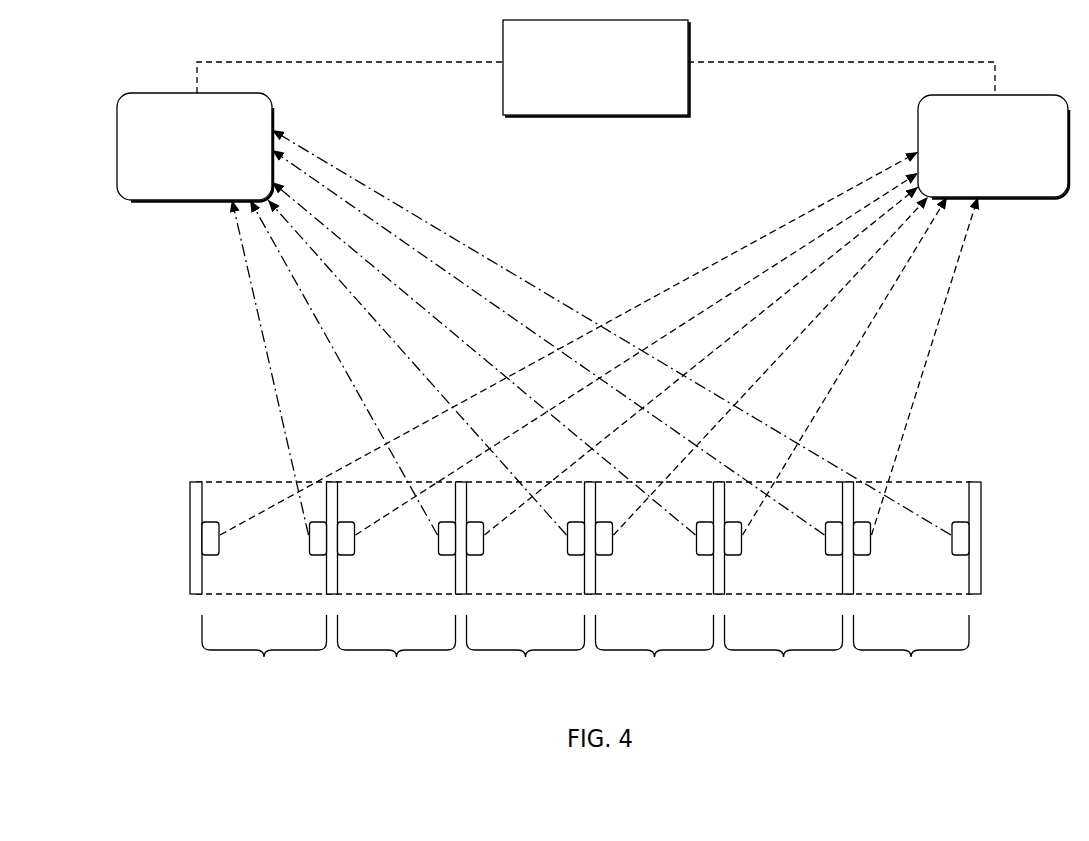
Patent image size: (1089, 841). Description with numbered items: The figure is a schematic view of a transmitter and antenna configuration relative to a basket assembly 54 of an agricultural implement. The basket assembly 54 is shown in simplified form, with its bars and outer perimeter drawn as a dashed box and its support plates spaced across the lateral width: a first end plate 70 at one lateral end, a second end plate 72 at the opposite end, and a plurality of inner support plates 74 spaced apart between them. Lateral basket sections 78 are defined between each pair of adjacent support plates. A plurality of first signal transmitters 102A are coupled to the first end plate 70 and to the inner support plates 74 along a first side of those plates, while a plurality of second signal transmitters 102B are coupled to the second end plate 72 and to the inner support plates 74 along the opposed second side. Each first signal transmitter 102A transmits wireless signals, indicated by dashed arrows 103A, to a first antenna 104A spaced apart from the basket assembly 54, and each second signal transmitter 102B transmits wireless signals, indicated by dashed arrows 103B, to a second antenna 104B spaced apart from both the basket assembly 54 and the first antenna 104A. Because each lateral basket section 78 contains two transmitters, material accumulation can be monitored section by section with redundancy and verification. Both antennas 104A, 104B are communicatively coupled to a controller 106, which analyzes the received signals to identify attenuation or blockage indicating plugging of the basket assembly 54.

The basket assembly 54 is at (172, 468).
The first end plate 70 is at (190, 568).
The second end plate 72 is at (983, 568).
The inner support plates 74 is at (328, 578).
The lateral basket sections 78 is at (585, 652).
The first signal transmitters 102A is at (216, 554).
The second signal transmitters 102B is at (309, 539).
The dashed arrows 103A is at (798, 283).
The dashed arrows 103B is at (391, 283).
The first antenna 104A is at (993, 147).
The second antenna 104B is at (195, 147).
The controller 106 is at (596, 68).